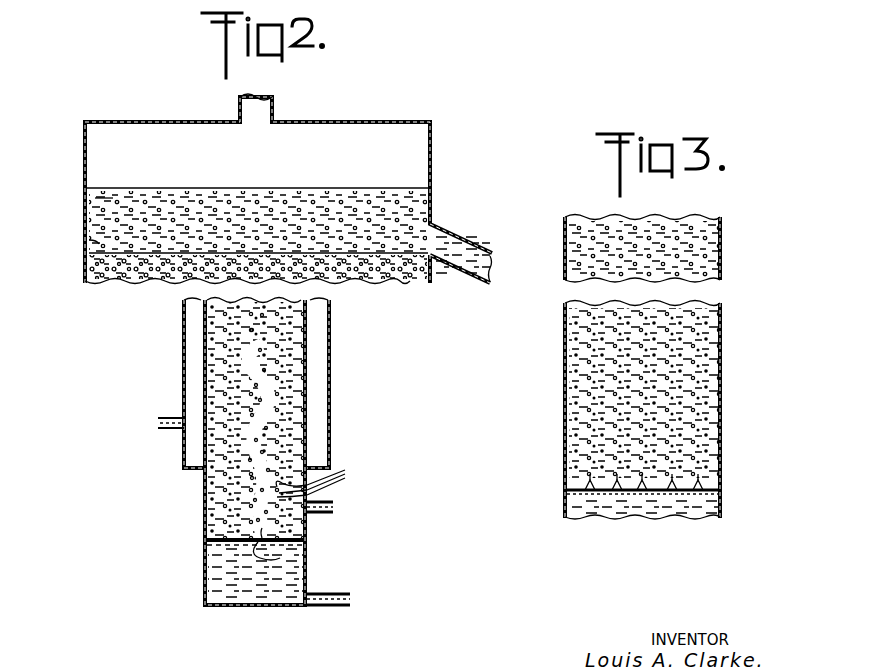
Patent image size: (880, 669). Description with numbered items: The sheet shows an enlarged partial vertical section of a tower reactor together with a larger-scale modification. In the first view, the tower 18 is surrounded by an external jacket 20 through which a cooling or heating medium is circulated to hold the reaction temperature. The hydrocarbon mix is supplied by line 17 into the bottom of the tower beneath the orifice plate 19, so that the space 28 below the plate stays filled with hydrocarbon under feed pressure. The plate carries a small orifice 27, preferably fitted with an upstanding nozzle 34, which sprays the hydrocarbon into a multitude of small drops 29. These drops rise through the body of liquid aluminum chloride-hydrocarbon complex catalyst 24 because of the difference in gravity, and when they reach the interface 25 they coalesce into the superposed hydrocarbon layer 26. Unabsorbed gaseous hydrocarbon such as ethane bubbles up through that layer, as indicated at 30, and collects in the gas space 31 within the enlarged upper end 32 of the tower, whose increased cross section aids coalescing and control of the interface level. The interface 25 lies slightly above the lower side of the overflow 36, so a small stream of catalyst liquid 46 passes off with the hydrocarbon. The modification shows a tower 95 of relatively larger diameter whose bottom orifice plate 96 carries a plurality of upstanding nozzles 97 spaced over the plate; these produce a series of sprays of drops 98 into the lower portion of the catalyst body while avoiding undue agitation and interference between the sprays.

In FIG. 2, the enlarged upper end 32 is at (432, 150).
In FIG. 2, the gas space 31 is at (271, 160).
In FIG. 2, the gas bubbles 30 is at (377, 218).
In FIG. 2, the hydrocarbon layer 26 is at (95, 198).
In FIG. 2, the interface 25 is at (90, 240).
In FIG. 2, the liquid aluminum chloride-hydrocarbon complex catalyst 24 is at (167, 272).
In FIG. 2, the overflow 36 is at (468, 243).
In FIG. 2, the stream of catalyst liquid 46 is at (457, 274).
In FIG. 2, the external jacket 20 is at (331, 360).
In FIG. 2, the tower 18 is at (310, 418).
In FIG. 2, the drops 29 is at (325, 485).
In FIG. 2, the upstanding nozzle 34 is at (263, 535).
In FIG. 2, the orifice plate 19 is at (207, 545).
In FIG. 2, the orifice 27 is at (282, 558).
In FIG. 2, the space 28 is at (208, 573).
In FIG. 2, the line 17 is at (342, 580).
In FIG. 3, the tower 95 is at (722, 278).
In FIG. 3, the sprays of drops 98 is at (712, 458).
In FIG. 3, the upstanding nozzles 97 is at (700, 480).
In FIG. 3, the bottom orifice plate 96 is at (716, 494).